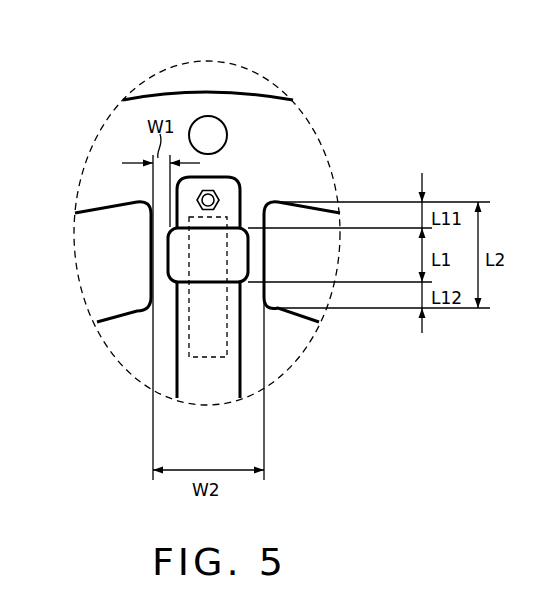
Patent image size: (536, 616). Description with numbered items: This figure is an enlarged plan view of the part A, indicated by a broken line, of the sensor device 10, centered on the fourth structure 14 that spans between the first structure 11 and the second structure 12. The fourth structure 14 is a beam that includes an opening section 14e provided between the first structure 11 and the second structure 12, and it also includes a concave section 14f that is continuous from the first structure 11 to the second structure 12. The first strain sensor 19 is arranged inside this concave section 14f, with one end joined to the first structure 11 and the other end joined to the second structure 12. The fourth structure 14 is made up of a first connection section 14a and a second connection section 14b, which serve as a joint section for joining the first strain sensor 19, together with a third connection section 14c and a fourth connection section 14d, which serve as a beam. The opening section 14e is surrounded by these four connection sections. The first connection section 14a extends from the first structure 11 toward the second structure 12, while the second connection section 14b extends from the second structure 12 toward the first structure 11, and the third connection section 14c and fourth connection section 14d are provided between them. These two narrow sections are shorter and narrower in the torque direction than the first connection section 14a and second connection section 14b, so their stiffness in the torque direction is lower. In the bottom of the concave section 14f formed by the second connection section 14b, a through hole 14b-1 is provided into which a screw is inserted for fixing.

The fixing structure 10 is at (213, 66).
The enlarged part A is at (143, 83).
The first structure 11 is at (100, 160).
The second structure 12 is at (147, 362).
The fourth structure 14 is at (231, 176).
The first connection section 14a is at (254, 204).
The second connection section 14b is at (253, 299).
The through hole 14b-1 is at (243, 330).
The third connection section 14c is at (160, 260).
The fourth connection section 14d is at (257, 258).
The opening section 14e is at (176, 248).
The concave section 14f is at (228, 202).
The first strain sensor 19 is at (188, 327).